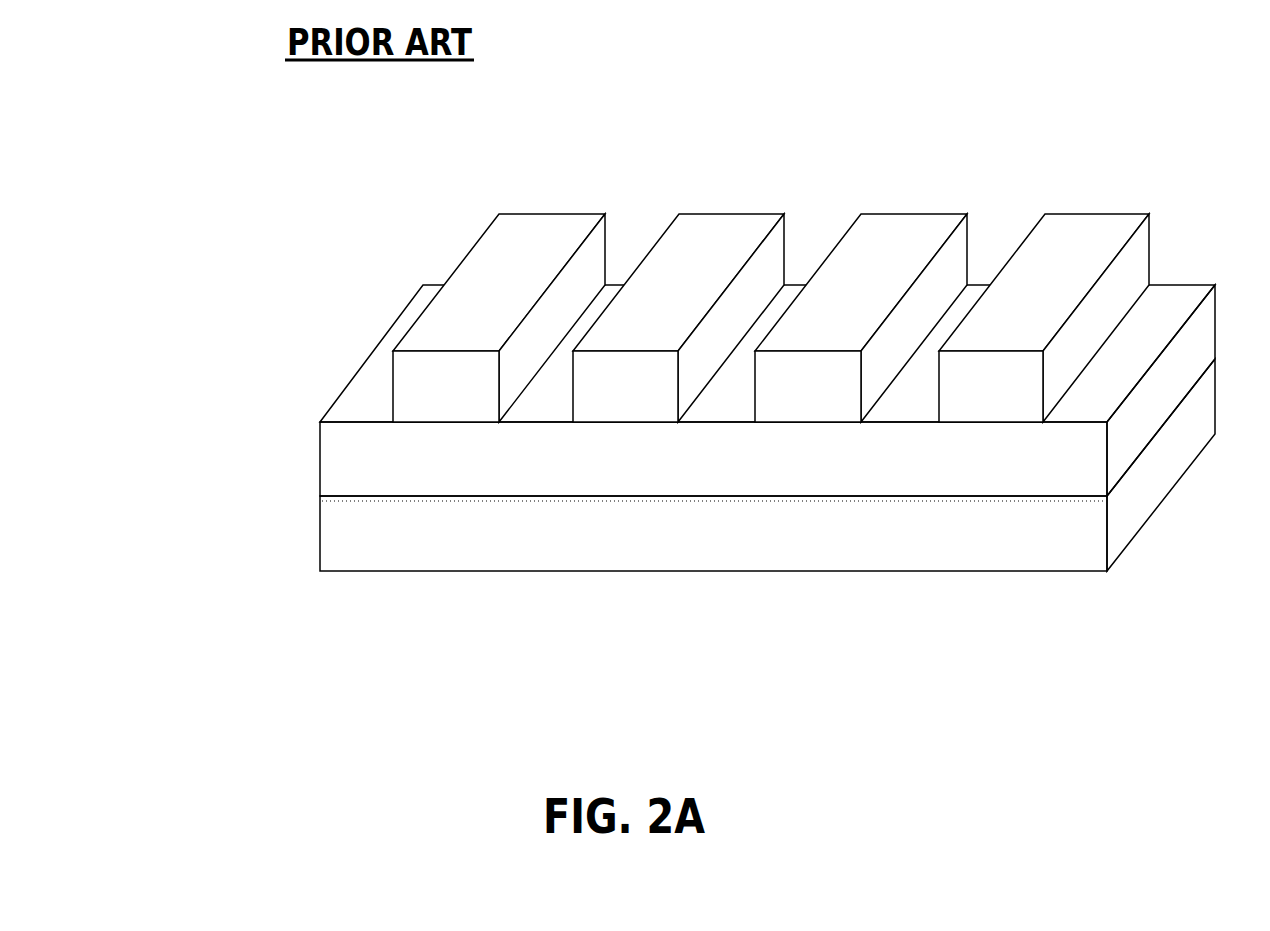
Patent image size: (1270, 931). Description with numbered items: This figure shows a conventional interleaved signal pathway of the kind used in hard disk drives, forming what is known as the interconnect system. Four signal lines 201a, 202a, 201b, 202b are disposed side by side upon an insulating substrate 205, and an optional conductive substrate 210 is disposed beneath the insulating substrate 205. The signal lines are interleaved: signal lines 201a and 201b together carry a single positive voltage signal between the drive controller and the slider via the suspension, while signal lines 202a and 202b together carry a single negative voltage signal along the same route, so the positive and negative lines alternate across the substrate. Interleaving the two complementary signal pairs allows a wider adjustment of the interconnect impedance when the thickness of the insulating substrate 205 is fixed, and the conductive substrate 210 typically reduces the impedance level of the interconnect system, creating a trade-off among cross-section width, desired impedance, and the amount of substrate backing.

The signal line 201a is at (523, 233).
The signal line 202a is at (713, 233).
The signal line 201b is at (893, 233).
The signal line 202b is at (1081, 233).
The insulating substrate 205 is at (337, 471).
The conductive substrate 210 is at (415, 547).